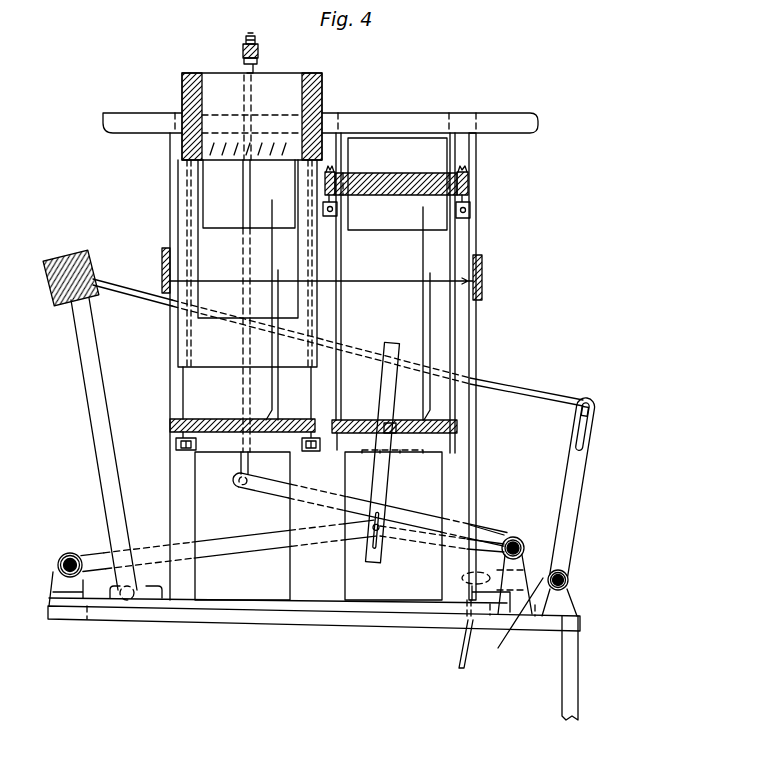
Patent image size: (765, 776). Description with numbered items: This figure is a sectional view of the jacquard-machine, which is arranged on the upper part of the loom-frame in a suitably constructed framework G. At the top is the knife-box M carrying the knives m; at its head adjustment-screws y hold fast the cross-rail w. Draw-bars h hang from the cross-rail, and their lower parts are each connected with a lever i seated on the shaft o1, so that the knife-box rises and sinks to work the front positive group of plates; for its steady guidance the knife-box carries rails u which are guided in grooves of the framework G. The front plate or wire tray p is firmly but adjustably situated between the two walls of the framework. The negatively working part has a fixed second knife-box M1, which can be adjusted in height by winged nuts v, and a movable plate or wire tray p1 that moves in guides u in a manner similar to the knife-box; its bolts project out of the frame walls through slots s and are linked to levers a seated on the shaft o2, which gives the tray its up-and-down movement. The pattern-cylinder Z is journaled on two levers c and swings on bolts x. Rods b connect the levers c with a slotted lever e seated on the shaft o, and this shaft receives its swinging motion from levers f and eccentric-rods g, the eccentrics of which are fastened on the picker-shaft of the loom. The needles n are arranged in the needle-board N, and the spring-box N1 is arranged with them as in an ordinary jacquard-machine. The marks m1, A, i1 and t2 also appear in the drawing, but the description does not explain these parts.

The adjustment-screws y is at (257, 44).
The cross-rail w is at (259, 51).
The knife-box M is at (322, 92).
The draw-bar h is at (245, 175).
The knives m is at (289, 158).
The front plate or wire tray p is at (274, 202).
The rails u is at (183, 390).
The second knife-box M1 is at (400, 180).
The auxiliary mold bar m1 is at (420, 163).
The winged nuts v is at (335, 172).
The plate or wire tray p1 is at (361, 418).
The slots s is at (396, 420).
The pattern-cylinder Z is at (96, 268).
The needle-board N is at (160, 258).
The spring-box N1 is at (483, 262).
The needles n is at (321, 292).
The rods b is at (152, 298).
The levers c is at (95, 386).
The framework G is at (464, 318).
The housing box A is at (192, 488).
The lever i is at (277, 487).
The lever link i1 is at (490, 525).
The spring t2 is at (417, 452).
The levers a is at (257, 543).
The shaft o2 is at (76, 553).
The bolts x is at (138, 590).
The shaft o1 is at (524, 533).
The shaft o is at (571, 569).
The slotted lever e is at (573, 485).
The levers f is at (520, 621).
The eccentric-rods g is at (460, 645).